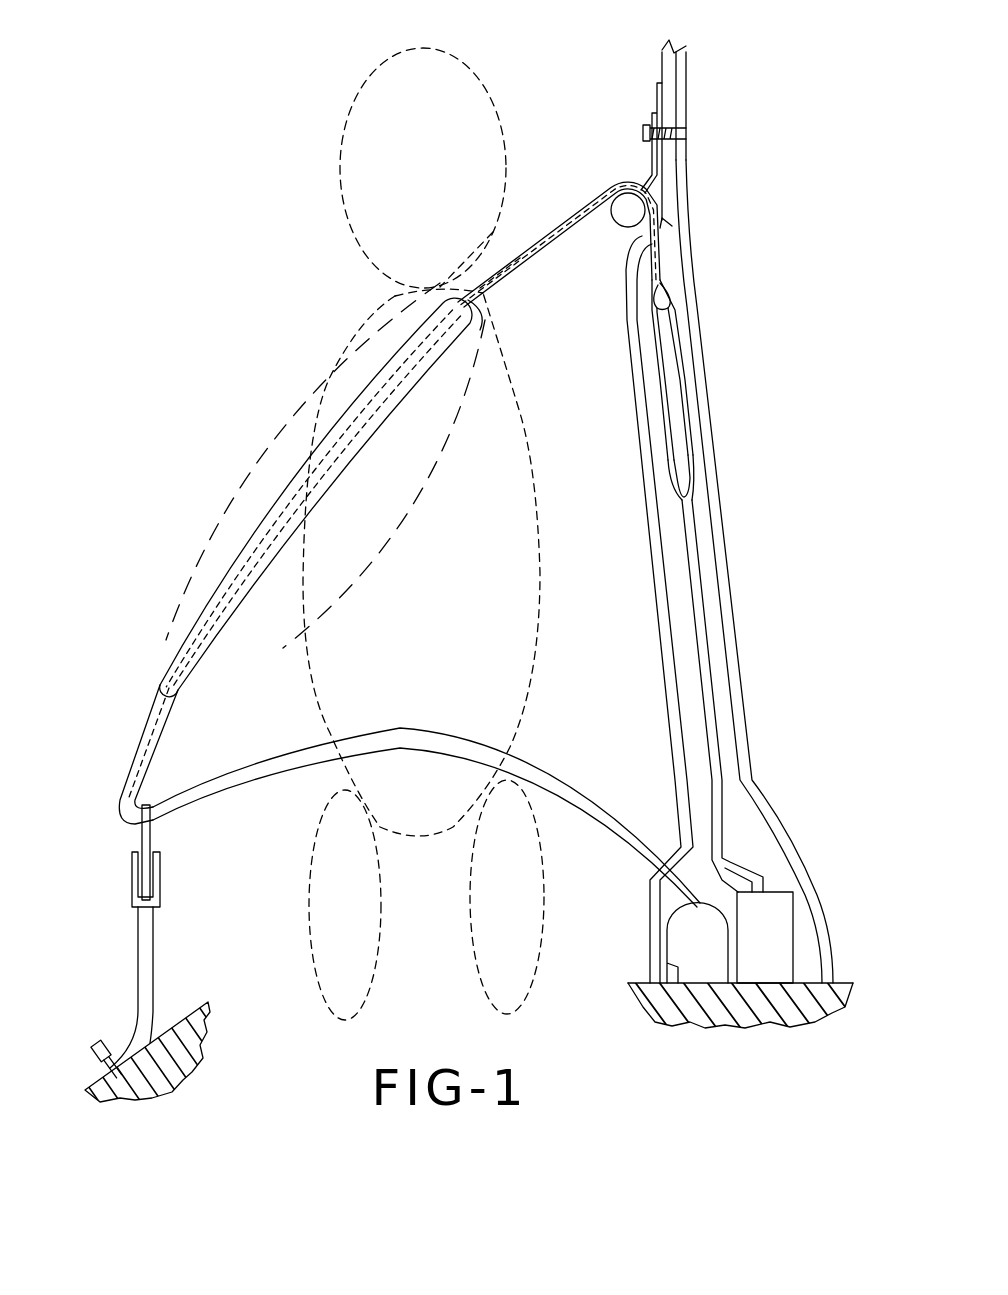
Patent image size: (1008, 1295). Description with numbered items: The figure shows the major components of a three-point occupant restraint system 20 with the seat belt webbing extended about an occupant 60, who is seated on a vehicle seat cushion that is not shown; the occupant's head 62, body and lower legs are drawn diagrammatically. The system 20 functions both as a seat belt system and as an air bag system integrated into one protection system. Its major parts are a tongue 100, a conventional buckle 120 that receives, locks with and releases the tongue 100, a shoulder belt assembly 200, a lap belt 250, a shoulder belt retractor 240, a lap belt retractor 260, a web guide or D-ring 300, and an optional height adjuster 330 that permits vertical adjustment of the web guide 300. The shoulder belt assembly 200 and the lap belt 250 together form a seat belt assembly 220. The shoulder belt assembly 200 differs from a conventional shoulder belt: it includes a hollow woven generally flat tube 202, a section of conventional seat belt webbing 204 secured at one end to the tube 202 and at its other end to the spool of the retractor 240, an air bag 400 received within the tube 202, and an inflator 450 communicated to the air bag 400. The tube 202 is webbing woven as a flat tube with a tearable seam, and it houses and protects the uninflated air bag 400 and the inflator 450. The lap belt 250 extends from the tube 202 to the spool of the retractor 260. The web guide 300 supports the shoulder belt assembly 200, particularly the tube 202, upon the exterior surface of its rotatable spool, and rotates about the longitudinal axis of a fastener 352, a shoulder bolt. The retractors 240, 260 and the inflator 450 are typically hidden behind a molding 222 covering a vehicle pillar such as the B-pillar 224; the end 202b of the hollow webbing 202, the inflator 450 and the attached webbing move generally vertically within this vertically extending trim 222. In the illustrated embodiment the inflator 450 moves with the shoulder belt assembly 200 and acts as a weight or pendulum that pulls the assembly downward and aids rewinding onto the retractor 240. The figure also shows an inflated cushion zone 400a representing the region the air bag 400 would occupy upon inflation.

The three-point occupant restraint system 20 is at (306, 333).
The occupant 60 is at (350, 186).
The head 62 is at (370, 107).
The tongue 100 is at (152, 825).
The buckle 120 is at (160, 895).
The shoulder belt assembly 200 is at (574, 214).
The hollow woven generally flat tube 202 is at (515, 262).
The end of the hollow seat belt webbing 202b is at (661, 268).
The seat belt webbing 204 is at (705, 665).
The seat belt assembly 220 is at (140, 718).
The molding 222 is at (648, 472).
The B-pillar 224 is at (725, 625).
The shoulder belt retractor 240 is at (777, 903).
The lap belt 250 is at (443, 733).
The lap belt retractor 260 is at (677, 940).
The web guide 300 is at (620, 200).
The height adjuster 330 is at (655, 95).
The fastener 352 is at (643, 128).
The air bag 400 is at (287, 507).
The inflated cushion zone 400a is at (190, 478).
The inflator 450 is at (685, 465).